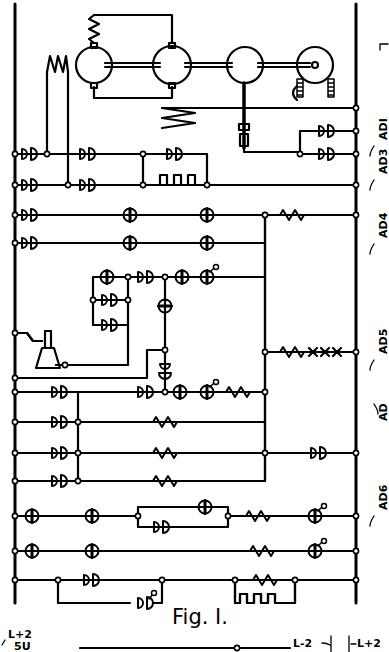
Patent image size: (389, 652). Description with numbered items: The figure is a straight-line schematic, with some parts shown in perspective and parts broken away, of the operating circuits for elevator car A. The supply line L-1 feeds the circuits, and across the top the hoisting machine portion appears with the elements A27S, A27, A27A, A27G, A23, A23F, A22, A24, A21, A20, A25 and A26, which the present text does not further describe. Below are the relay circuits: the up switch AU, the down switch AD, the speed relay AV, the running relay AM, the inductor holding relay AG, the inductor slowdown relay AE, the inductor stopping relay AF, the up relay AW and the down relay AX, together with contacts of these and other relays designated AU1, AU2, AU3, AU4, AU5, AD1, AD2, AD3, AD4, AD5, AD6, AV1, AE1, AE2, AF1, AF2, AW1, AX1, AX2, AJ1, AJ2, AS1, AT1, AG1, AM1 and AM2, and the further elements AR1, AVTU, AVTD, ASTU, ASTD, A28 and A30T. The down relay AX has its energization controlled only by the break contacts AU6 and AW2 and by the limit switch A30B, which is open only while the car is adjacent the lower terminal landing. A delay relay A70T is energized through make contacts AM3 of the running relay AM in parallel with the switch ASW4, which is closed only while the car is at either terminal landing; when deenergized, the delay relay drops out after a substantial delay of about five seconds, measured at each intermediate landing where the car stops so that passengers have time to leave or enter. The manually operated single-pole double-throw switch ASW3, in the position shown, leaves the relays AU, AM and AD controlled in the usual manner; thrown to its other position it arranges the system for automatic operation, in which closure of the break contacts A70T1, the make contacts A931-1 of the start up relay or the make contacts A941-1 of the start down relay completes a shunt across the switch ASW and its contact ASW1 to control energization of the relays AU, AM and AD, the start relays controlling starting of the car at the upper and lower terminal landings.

The negative supply line L-1 is at (355, 18).
The generator series field A27S is at (100, 22).
The generator A27 is at (138, 46).
The armature A27A is at (178, 52).
The generator field winding A27G is at (50, 56).
The hoist motor A23 is at (210, 100).
The drive motor A22 is at (248, 46).
The shaft A24 is at (290, 61).
The drum A21 is at (330, 53).
The brake A20 is at (313, 92).
The brake arm A25 is at (250, 90).
The brake solenoid A26 is at (250, 135).
The motor field winding A23F is at (161, 115).
The up relay contact AU1 is at (319, 128).
The down relay contact AD1 is at (97, 152).
The relay contact AV1 is at (184, 152).
The resistor AR1 is at (173, 180).
The up relay contact AU2 is at (30, 159).
The up relay contact AU3 is at (97, 184).
The down relay contact AD2 is at (333, 161).
The down relay contact AD3 is at (35, 192).
The up timing contact AVTU is at (125, 213).
The relay contact AE1 is at (213, 211).
The speed relay AV is at (301, 212).
The up relay contact AU4 is at (35, 222).
The down timing contact AVTD is at (125, 242).
The relay contact AE2 is at (213, 240).
The down relay contact AD4 is at (43, 263).
The break contacts A70T1 is at (93, 270).
The relay contact AW1 is at (146, 272).
The relay contact AF1 is at (182, 284).
The up stop timer contact ASTU is at (211, 272).
The up switch AU is at (266, 278).
The make contacts A931-1 is at (100, 296).
The make contacts A941-1 is at (100, 325).
The single-pole double-throw switch ASW3 is at (23, 330).
The switch ASW is at (55, 343).
The contact ASW1 is at (69, 366).
The up relay contact AU5 is at (171, 307).
The down relay contact AD5 is at (169, 366).
The running relay AM is at (282, 350).
The limit switch A28 is at (335, 363).
The down stop timer contact ASTD is at (212, 389).
The down switch AD is at (241, 396).
The relay contact AT1 is at (52, 399).
The relay contact AX1 is at (135, 398).
The relay contact AF2 is at (174, 400).
The inductor holding relay AG is at (151, 428).
The inductor slowdown relay AE is at (177, 452).
The inductor stopping relay AF is at (177, 481).
The relay contact AJ1 is at (52, 429).
The relay contact AS1 is at (52, 459).
The relay contact AG1 is at (52, 488).
The relay contact AM1 is at (314, 448).
The down relay contact AD6 is at (27, 520).
The relay contact AX2 is at (110, 506).
The relay contact AJ2 is at (198, 503).
The up relay AW is at (266, 513).
The timer contact A30T is at (318, 506).
The break contacts AW2 is at (97, 549).
The relay contact AM2 is at (161, 533).
The down relay AX is at (262, 547).
The limit switch A30B is at (318, 543).
The break contacts AU6 is at (35, 558).
The make contacts AM3 is at (96, 577).
The delay relay A70T is at (263, 576).
The switch ASW4 is at (130, 600).